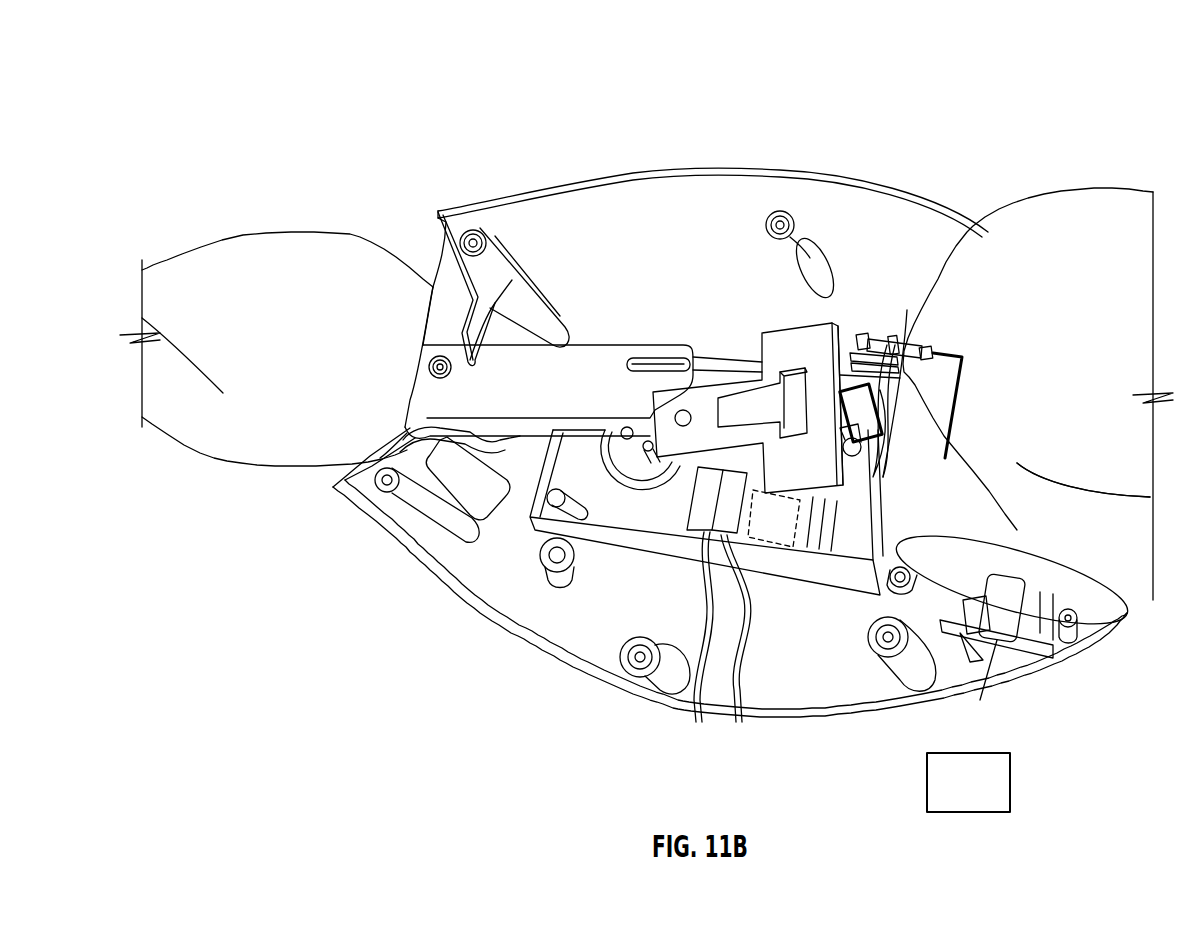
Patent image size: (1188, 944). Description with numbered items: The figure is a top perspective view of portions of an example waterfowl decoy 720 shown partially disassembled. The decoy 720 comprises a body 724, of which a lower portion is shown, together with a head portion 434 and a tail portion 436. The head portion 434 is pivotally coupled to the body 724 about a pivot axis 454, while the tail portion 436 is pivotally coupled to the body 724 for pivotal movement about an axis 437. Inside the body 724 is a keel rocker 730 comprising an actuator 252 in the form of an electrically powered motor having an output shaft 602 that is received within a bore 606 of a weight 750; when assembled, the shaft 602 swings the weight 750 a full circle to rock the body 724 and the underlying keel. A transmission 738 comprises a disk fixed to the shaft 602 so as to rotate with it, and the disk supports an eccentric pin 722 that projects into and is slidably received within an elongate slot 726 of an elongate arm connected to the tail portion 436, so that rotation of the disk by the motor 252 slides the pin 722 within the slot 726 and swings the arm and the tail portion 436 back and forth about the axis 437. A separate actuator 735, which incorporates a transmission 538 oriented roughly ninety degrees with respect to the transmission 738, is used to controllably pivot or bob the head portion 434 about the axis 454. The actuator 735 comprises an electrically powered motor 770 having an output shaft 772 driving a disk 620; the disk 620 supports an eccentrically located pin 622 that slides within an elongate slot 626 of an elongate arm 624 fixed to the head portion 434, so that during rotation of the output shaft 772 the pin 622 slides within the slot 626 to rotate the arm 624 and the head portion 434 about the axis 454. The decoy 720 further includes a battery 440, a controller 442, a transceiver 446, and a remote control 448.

The decoy 720 is at (380, 86).
The body 724 is at (572, 357).
The head portion 434 is at (1098, 222).
The tail portion 436 is at (160, 296).
The pivot axis 437 is at (453, 370).
The transmission 738 is at (608, 333).
The elongate slot 726 is at (660, 364).
The bore 606 is at (690, 418).
The keel rocker 730 is at (733, 320).
The weight 750 is at (810, 327).
The electrically powered motor 770 is at (866, 452).
The output shaft 772 is at (889, 411).
The transmission 538 is at (893, 345).
The actuator 735 is at (884, 300).
The elongate arm 624 is at (868, 337).
The pin 622 is at (898, 334).
The elongate slot 626 is at (930, 344).
The disk 620 is at (900, 368).
The eccentric pin 722 is at (556, 433).
The actuator 252 is at (588, 500).
The output shaft 602 is at (693, 516).
The battery 440 is at (693, 517).
The controller 442 is at (723, 537).
The transceiver 446 is at (788, 545).
The pivot axis 454 is at (908, 682).
The remote control 448 is at (1012, 782).